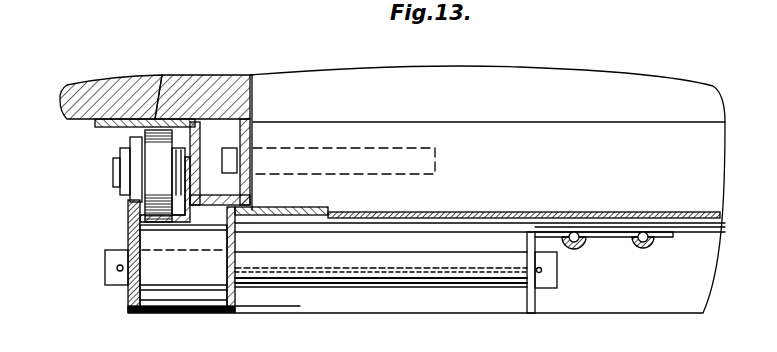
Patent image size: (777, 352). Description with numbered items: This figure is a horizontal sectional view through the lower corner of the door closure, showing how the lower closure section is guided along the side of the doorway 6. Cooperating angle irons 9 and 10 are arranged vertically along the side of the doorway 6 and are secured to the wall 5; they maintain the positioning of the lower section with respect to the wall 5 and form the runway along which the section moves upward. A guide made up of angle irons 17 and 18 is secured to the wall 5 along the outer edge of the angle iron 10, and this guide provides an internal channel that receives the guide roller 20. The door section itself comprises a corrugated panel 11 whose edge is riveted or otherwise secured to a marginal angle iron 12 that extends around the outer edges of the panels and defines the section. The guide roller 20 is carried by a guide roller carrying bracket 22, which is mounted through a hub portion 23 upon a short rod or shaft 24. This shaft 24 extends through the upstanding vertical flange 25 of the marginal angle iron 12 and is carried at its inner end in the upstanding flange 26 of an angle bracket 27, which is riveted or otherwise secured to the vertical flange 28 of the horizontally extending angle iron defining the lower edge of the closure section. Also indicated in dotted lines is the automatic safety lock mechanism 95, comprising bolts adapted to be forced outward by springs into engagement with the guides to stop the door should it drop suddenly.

The wall 5 is at (87, 86).
The angle iron 18 is at (157, 72).
The doorway 6 is at (253, 73).
The angle iron 9 is at (255, 121).
The angle iron 10 is at (251, 198).
The guide roller 20 is at (130, 203).
The guide roller carrying bracket 22 is at (128, 225).
The angle iron 17 is at (160, 224).
The hub portion 23 is at (195, 312).
The angle iron 12 is at (300, 212).
The panel 11 is at (382, 213).
The automatic safety lock mechanism 95 is at (436, 160).
The short rod or shaft 24 is at (402, 280).
The upstanding vertical flange 25 is at (235, 307).
The upstanding flange 26 is at (533, 293).
The angle bracket 27 is at (608, 256).
The vertical flange 28 is at (643, 225).